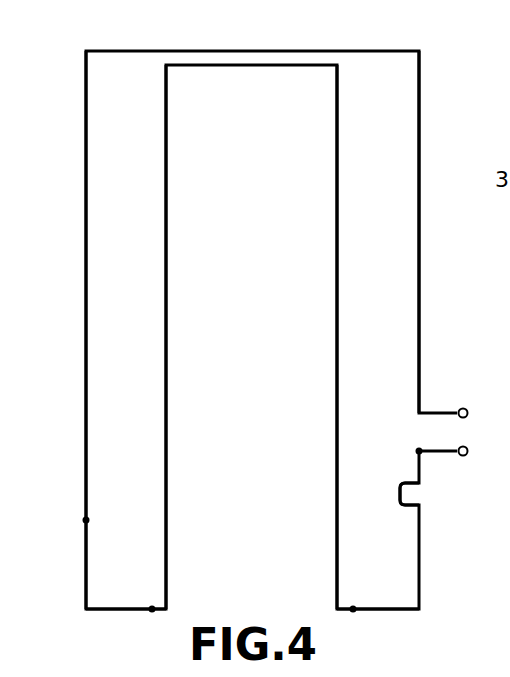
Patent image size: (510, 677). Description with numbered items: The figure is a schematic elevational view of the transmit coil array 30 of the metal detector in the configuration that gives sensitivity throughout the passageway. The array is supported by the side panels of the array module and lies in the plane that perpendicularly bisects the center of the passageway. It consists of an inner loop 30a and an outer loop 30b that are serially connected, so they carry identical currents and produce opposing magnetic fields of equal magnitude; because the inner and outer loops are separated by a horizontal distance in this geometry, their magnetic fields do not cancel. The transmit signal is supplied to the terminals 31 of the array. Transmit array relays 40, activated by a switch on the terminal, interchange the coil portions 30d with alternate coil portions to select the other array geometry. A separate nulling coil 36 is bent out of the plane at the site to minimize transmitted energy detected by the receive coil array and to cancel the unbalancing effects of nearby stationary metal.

The transmit coil array 30 is at (377, 39).
The inner loop 30a is at (168, 210).
The outer loop 30b is at (84, 270).
The coil portions 30d is at (84, 550).
The terminals 31 is at (469, 449).
The nulling coil 36 is at (400, 494).
The transmit array relays 40 is at (84, 520).